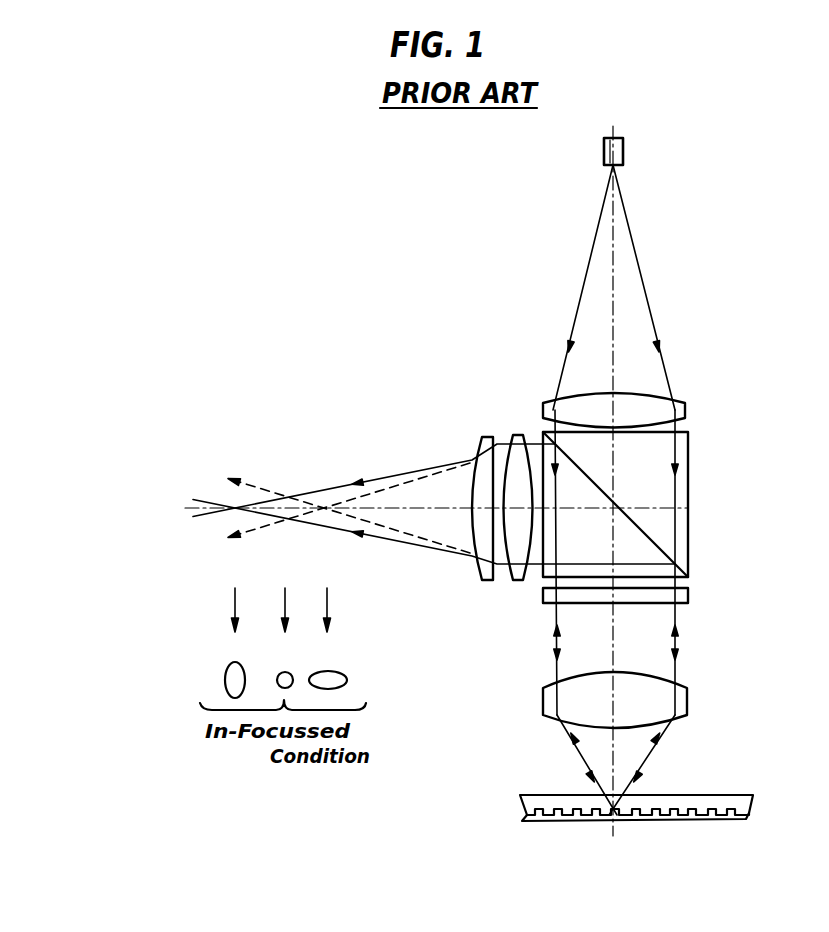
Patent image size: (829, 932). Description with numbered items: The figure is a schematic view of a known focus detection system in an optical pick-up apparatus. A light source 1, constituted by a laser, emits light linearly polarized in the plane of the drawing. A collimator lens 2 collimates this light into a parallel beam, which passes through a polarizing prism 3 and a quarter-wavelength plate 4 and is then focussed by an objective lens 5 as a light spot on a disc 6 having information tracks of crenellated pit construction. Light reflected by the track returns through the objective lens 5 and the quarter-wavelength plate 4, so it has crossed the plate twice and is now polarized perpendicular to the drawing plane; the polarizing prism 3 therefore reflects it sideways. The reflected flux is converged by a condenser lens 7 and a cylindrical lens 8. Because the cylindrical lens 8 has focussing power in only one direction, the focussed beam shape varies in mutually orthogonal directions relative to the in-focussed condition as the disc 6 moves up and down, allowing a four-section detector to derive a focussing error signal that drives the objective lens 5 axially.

The light source 1 is at (625, 150).
The collimator lens 2 is at (686, 409).
The polarizing prism 3 is at (689, 471).
The quarter-wavelength plate 4 is at (688, 596).
The objective lens 5 is at (687, 698).
The disc 6 is at (706, 805).
The condenser lens 7 is at (517, 435).
The cylindrical lens 8 is at (484, 437).